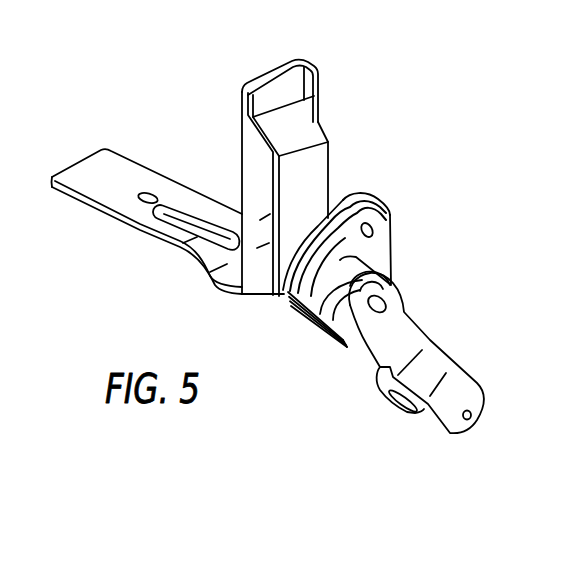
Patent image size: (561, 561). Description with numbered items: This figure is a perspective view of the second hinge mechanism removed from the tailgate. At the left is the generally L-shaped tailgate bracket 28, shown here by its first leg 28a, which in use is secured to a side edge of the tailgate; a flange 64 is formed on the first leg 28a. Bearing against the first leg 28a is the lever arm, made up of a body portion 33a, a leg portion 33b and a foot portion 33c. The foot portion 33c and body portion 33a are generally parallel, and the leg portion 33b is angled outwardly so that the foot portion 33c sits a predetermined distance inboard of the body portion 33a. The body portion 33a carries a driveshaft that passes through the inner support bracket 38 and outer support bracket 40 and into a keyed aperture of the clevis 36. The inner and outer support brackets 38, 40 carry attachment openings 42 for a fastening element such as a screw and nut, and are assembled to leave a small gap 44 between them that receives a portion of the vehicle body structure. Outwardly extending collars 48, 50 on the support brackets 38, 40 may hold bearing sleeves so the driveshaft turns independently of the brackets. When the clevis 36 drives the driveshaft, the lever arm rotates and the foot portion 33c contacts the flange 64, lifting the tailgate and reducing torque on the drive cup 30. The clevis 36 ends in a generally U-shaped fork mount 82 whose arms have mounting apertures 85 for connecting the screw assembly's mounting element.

The tailgate bracket 28 is at (90, 170).
The first leg 28a is at (260, 163).
The drive cup 30 is at (260, 292).
The body portion 33a is at (315, 165).
The leg portion 33b is at (291, 127).
The foot portion 33c is at (319, 85).
The flange 64 is at (281, 95).
The inner support bracket 38 is at (340, 192).
The outer support bracket 40 is at (380, 253).
The attachment openings 42 is at (373, 235).
The gap 44 is at (357, 197).
The clevis 36 is at (402, 337).
The collar 48 is at (291, 290).
The collar 50 is at (317, 313).
The fork mount 82 is at (416, 423).
The mounting apertures 85 is at (470, 415).